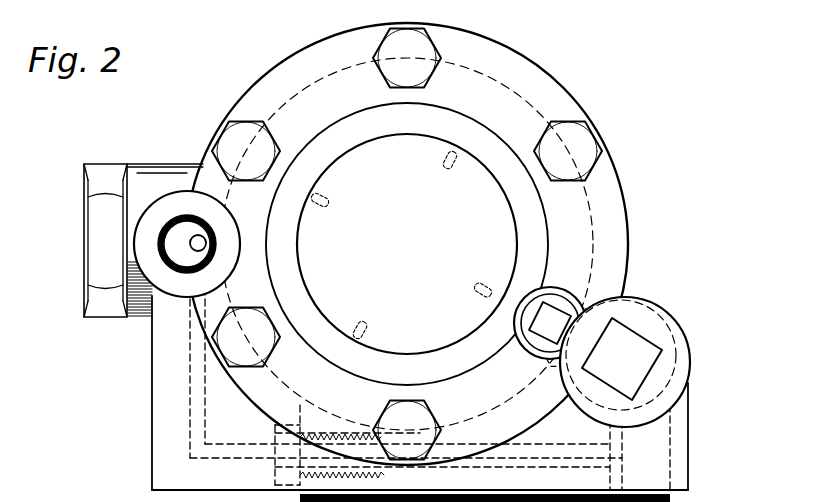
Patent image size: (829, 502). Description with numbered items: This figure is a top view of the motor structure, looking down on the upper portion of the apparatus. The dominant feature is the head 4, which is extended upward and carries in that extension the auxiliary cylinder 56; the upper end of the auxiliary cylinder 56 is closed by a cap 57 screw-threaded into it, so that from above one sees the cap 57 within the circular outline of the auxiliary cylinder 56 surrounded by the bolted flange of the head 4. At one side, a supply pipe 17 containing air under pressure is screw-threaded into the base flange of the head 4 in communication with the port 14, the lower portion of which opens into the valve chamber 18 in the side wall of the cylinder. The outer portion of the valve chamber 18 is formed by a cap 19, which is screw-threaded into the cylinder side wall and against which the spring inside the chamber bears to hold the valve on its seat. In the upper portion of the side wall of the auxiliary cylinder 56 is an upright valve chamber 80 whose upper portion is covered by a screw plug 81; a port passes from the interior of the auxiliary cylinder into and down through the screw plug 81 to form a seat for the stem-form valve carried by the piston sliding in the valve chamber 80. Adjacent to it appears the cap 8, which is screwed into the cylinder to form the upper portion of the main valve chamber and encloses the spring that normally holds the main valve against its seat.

The head 4 is at (563, 105).
The auxiliary cylinder 56 is at (488, 130).
The cap 57 is at (407, 244).
The valve chamber 18 is at (145, 178).
The supply pipe 17 is at (157, 245).
The cap 19 is at (98, 220).
The port 14 is at (138, 317).
The valve chamber 80 is at (562, 285).
The screw plug 81 is at (553, 315).
The cap 8 is at (630, 347).